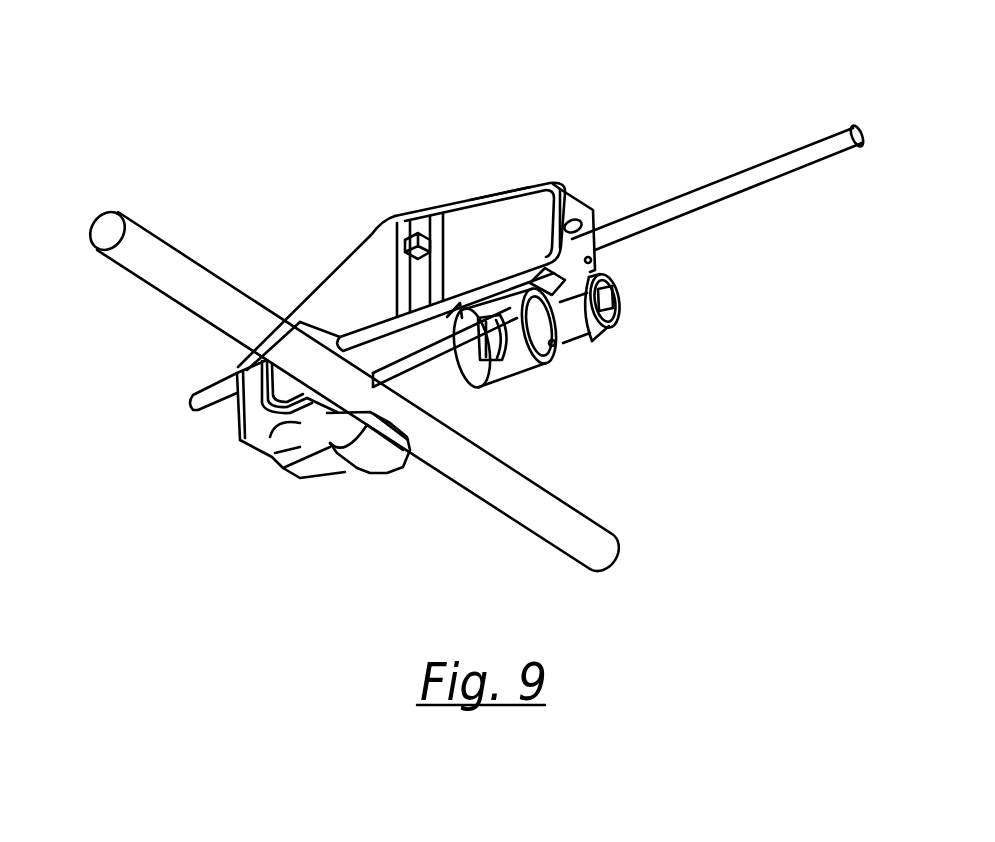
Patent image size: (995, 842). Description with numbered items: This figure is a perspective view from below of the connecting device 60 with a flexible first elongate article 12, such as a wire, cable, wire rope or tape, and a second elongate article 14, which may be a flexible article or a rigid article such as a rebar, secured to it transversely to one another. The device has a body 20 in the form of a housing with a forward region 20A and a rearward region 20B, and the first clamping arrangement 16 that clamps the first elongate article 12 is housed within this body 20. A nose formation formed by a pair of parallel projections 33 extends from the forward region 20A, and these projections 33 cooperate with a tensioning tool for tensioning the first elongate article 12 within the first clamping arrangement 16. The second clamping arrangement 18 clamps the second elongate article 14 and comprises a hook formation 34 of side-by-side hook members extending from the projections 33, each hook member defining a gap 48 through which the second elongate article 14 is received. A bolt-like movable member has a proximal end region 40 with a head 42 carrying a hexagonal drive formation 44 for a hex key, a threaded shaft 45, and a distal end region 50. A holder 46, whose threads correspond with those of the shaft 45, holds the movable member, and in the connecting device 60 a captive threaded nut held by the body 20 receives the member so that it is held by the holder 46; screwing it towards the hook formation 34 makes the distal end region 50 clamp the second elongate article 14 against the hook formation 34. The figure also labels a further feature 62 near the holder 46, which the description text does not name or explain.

The first elongate article 12 is at (822, 148).
The second elongate article 14 is at (105, 231).
The first clamping arrangement 16 is at (588, 199).
The second clamping arrangement 18 is at (601, 390).
The body 20 is at (432, 185).
The forward region 20A is at (413, 222).
The rearward region 20B is at (549, 182).
The projections 33 is at (307, 305).
The hook formation 34 is at (356, 382).
The proximal end region 40 is at (687, 331).
The head 42 is at (587, 333).
The drive formation 44 is at (610, 290).
The threaded shaft 45 is at (498, 254).
The holder 46 is at (516, 383).
The gap 48 is at (407, 437).
The distal end region 50 is at (390, 383).
The connecting device 60 is at (524, 155).
The slot 62 is at (490, 307).